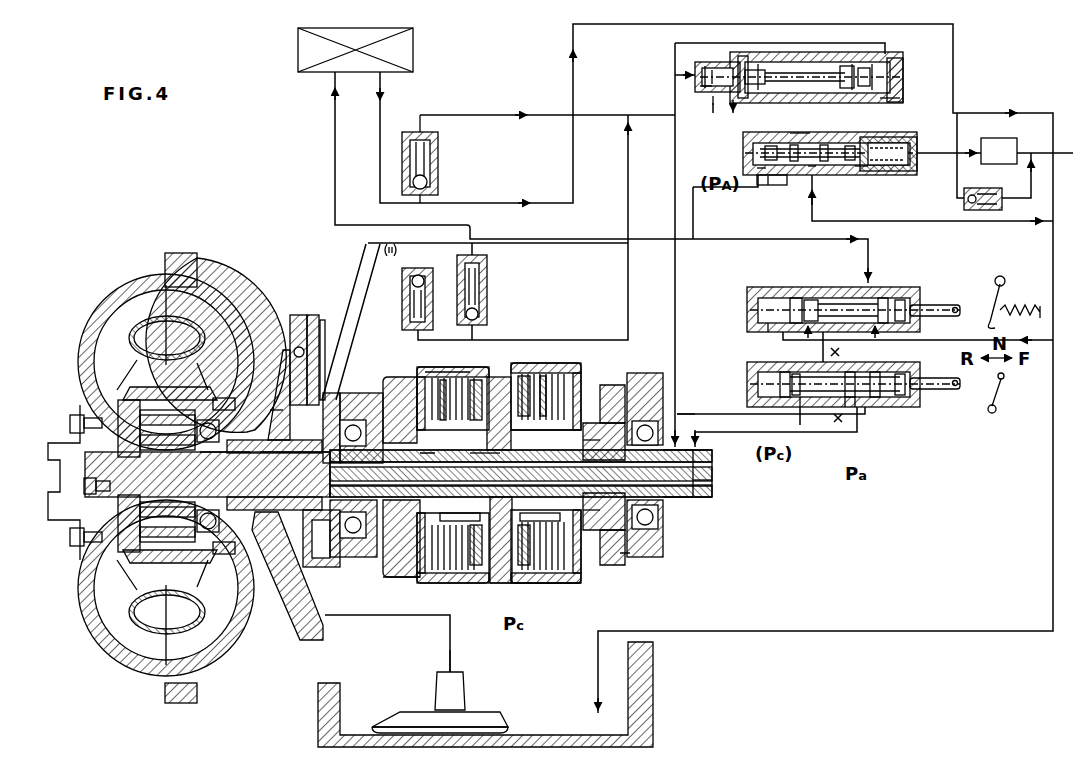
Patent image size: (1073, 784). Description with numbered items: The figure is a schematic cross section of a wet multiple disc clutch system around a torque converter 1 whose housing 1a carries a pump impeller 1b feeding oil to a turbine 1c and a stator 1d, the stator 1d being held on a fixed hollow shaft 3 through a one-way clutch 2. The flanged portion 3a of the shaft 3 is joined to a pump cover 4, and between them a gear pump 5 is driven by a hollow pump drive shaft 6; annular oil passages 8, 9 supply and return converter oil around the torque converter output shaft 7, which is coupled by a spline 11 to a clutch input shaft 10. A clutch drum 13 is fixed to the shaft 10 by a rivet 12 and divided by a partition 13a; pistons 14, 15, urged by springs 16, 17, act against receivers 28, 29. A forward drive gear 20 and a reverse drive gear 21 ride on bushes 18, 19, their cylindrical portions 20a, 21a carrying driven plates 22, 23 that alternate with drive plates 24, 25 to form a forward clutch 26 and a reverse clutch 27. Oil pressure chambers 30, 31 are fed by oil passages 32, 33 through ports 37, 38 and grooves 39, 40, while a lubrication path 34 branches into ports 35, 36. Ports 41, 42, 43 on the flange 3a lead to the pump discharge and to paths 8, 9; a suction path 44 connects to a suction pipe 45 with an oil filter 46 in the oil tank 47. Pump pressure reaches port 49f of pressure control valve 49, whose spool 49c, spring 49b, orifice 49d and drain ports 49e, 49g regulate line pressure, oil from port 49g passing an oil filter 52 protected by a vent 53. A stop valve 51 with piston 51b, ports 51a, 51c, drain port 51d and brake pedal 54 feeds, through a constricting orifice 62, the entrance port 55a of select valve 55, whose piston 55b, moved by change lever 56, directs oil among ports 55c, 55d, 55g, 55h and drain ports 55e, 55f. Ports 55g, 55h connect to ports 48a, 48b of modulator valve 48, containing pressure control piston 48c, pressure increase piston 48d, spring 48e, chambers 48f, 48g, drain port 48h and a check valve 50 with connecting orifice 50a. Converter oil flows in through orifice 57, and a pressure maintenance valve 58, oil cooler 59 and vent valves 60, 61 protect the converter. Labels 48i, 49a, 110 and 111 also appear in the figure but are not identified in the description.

The torque converter 1 is at (170, 256).
The housing 1a is at (190, 268).
The pump impeller 1b is at (208, 300).
The turbine 1c is at (118, 320).
The stator 1d is at (172, 388).
The one-way clutch 2 is at (180, 555).
The fixed hollow shaft 3 is at (255, 438).
The flanged portion 3a is at (313, 315).
The pump cover 4 is at (298, 315).
The gear pump 5 is at (285, 350).
The pump drive shaft 6 is at (278, 405).
The torque converter output shaft 7 is at (175, 480).
The oil passage 8 is at (295, 466).
The oil passage 9 is at (225, 466).
The clutch input shaft 10 is at (357, 490).
The spline 11 is at (521, 466).
The rivet 12 is at (502, 583).
The clutch drum 13 is at (524, 585).
The partition 13a is at (497, 585).
The piston 14 is at (476, 583).
The piston 15 is at (541, 584).
The spring 16 is at (385, 560).
The spring 17 is at (590, 560).
The bush 18 is at (396, 380).
The bush 19 is at (598, 540).
The drive gear for forward motion 20 is at (405, 578).
The cylindrical portion 20a is at (457, 469).
The drive gear for reverse motion 21 is at (642, 545).
The cylindrical portion 21a is at (586, 424).
The driven plates 22 is at (452, 430).
The driven plates 23 is at (546, 430).
The drive plates 24 is at (458, 372).
The drive plates 25 is at (545, 372).
The clutch for the forward position 26 is at (435, 583).
The clutch for the reverse position 27 is at (566, 585).
The receiver 28 is at (420, 368).
The receiver 29 is at (582, 400).
The oil pressure chamber 30 is at (490, 470).
The oil pressure chamber 31 is at (522, 432).
The oil passage 32 is at (712, 475).
The oil passage 33 is at (690, 425).
The oil path 34 is at (712, 490).
The port 35 is at (430, 456).
The port 36 is at (535, 514).
The port 37 is at (702, 497).
The port 38 is at (705, 452).
The groove 39 is at (660, 497).
The groove 40 is at (702, 495).
The port 41 is at (324, 332).
The port 42 is at (335, 393).
The port 43 is at (348, 410).
The path 44 is at (290, 583).
The suction pipe 45 is at (450, 645).
The oil filter 46 is at (488, 712).
The oil tank 47 is at (653, 710).
The modulator valve 48 is at (815, 54).
The port 48a is at (695, 72).
The port 48b is at (903, 62).
The pressure control piston 48c is at (705, 64).
The pressure increase piston 48d is at (852, 62).
The spring 48e is at (759, 62).
The oil pressure chamber 48f is at (872, 62).
The oil pressure chamber 48g is at (700, 88).
The drain port 48h is at (713, 105).
The valve port 48i is at (900, 98).
The pressure control valve 49 is at (745, 156).
The valve port 49a is at (777, 186).
The spring 49b is at (917, 150).
The spool 49c is at (858, 172).
The orifice 49d is at (768, 186).
The drain port 49e is at (812, 190).
The port 49f is at (757, 176).
The second drain port 49g is at (795, 132).
The check valve 50 is at (893, 56).
The connecting orifice 50a is at (800, 77).
The stop valve 51 is at (747, 308).
The port 51a is at (860, 296).
The piston 51b is at (800, 298).
The port 51c is at (848, 311).
The drain port 51d is at (770, 330).
The oil filter 52 is at (983, 138).
The vent 53 is at (980, 210).
The brake pedal 54 is at (1000, 310).
The select valve 55 is at (915, 407).
The entrance port 55a is at (875, 372).
The piston 55b is at (945, 390).
The port 55c is at (860, 400).
The port 55d is at (810, 407).
The drain port 55e is at (905, 372).
The drain port 55f is at (790, 372).
The port 55g is at (855, 407).
The port 55h is at (845, 407).
The change lever 56 is at (997, 392).
The orifice 57 is at (398, 250).
The pressure maintenance valve 58 is at (487, 290).
The oil cooler 59 is at (413, 60).
The vent valve 60 is at (402, 308).
The vent valve 61 is at (438, 170).
The constricting orifice 62 is at (747, 385).
The clutch plate 110 is at (478, 372).
The clutch plate 111 is at (520, 378).